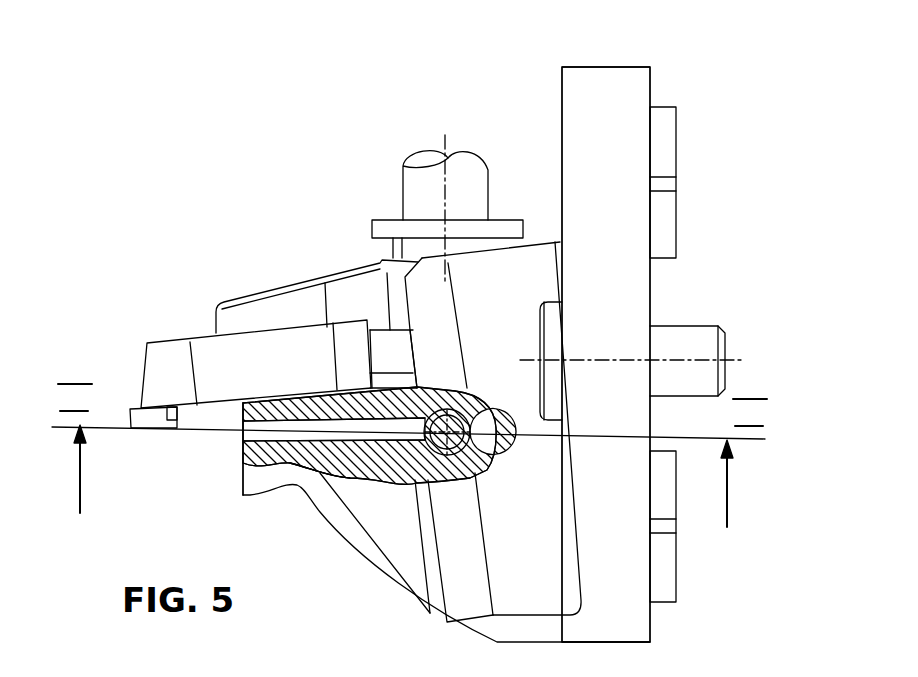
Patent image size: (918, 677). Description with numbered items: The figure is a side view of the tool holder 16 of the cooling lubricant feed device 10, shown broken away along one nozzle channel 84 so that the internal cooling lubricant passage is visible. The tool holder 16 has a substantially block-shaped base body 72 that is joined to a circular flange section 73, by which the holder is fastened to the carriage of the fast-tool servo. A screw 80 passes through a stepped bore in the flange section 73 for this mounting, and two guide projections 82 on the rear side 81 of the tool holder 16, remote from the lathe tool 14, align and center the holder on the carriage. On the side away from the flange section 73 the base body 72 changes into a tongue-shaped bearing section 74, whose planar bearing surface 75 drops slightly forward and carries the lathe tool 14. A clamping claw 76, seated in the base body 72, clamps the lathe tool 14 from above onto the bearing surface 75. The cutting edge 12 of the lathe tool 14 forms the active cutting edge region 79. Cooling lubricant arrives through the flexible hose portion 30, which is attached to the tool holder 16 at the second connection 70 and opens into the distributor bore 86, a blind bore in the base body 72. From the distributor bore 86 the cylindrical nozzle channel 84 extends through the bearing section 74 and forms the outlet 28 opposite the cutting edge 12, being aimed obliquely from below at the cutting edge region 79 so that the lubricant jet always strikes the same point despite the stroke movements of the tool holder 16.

The cooling lubricant feed device 10 is at (388, 197).
The cutting edge 12 is at (167, 424).
The lathe tool 14 is at (262, 373).
The tool holder 16 is at (628, 93).
The outlet 28 is at (242, 438).
The flexible hose portion 30 is at (462, 214).
The second connection 70 is at (465, 249).
The base body 72 is at (511, 293).
The flange section 73 is at (616, 150).
The bearing section 74 is at (288, 482).
The bearing surface 75 is at (297, 397).
The clamping claw 76 is at (280, 311).
The cutting edge region 79 is at (134, 425).
The screw 80 is at (556, 342).
The rear side 81 is at (651, 272).
The guide projection 82 is at (661, 168).
The nozzle channel 84 is at (362, 479).
The distributor bore 86 is at (493, 410).